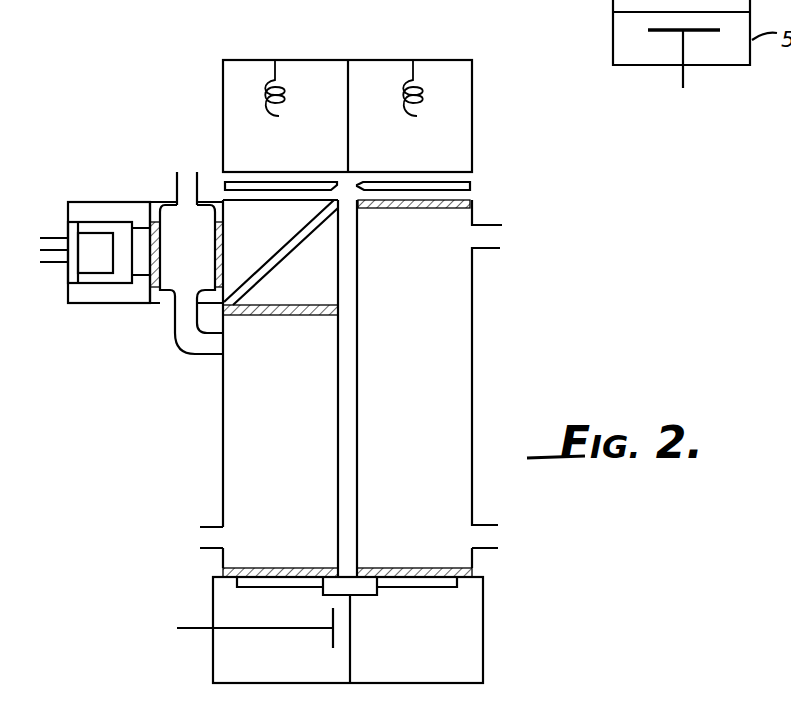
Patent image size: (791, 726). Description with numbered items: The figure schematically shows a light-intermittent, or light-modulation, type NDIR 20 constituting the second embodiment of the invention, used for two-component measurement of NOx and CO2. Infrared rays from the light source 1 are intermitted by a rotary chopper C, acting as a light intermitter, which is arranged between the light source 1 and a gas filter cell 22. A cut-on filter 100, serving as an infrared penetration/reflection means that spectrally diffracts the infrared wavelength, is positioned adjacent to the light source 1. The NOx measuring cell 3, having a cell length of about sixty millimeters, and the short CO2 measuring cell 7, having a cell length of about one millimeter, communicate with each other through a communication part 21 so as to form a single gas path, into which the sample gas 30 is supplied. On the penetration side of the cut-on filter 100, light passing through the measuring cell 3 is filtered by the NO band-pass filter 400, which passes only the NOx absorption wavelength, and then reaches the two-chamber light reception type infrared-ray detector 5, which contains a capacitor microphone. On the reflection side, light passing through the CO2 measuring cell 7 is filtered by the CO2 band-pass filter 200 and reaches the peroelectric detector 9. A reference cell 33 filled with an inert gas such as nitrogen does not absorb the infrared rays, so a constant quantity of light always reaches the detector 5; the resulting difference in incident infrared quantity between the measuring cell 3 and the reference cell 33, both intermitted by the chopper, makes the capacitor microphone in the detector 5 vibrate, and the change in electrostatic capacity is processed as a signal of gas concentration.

The light source 1 is at (374, 55).
The light-intermittent type NDIR 20 is at (203, 80).
The sample gas 30 is at (185, 172).
The rotary chopper C is at (470, 185).
The peroelectric detector 9 is at (68, 282).
The CO2 band-pass filter 200 is at (142, 280).
The CO2 measuring cell 7 is at (170, 297).
The communication part 21 is at (197, 357).
The NOx measuring cell 3 is at (223, 463).
The cut-on filter 100 is at (270, 270).
The gas filter cell 22 is at (340, 233).
The reference cell 33 is at (473, 378).
The capacitor microphone 5 is at (485, 637).
The NO band-pass filter 400 is at (280, 590).